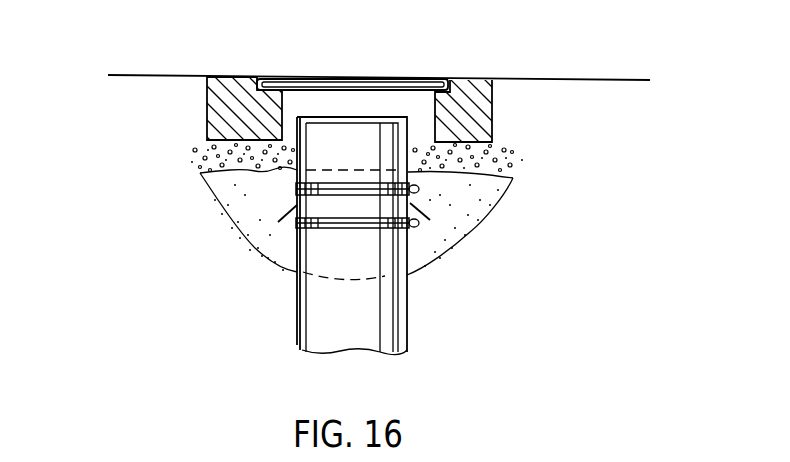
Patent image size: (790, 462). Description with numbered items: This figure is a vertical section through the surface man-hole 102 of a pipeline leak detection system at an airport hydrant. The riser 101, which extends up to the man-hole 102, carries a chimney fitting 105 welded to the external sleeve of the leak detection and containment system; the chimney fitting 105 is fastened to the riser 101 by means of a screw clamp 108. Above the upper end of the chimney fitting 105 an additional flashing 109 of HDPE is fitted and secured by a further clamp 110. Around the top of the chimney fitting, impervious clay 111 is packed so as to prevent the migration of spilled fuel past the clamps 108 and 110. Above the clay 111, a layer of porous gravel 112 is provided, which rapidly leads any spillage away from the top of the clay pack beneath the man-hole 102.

The riser 101 is at (304, 314).
The man-hole 102 is at (370, 103).
The chimney fitting 105 is at (297, 280).
The screw clamp 108 is at (358, 223).
The flashing 109 is at (282, 208).
The clamp 110 is at (418, 190).
The impervious clay 111 is at (467, 247).
The porous gravel 112 is at (193, 148).